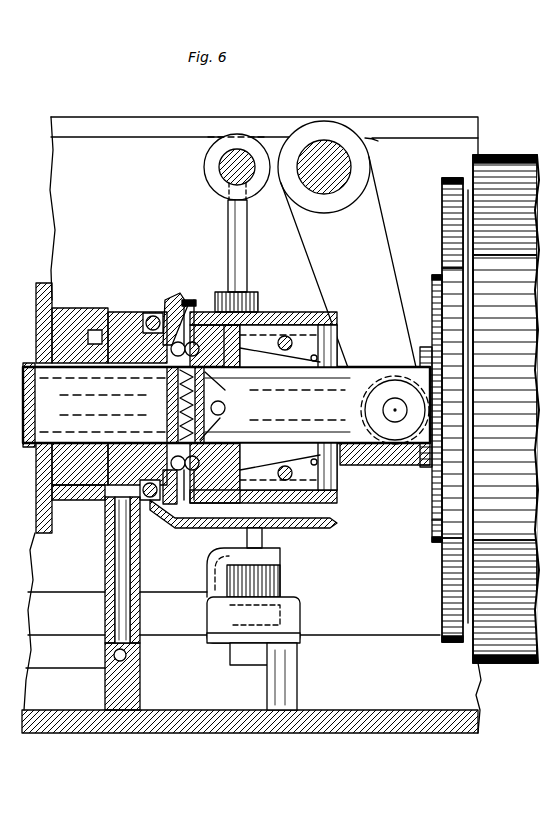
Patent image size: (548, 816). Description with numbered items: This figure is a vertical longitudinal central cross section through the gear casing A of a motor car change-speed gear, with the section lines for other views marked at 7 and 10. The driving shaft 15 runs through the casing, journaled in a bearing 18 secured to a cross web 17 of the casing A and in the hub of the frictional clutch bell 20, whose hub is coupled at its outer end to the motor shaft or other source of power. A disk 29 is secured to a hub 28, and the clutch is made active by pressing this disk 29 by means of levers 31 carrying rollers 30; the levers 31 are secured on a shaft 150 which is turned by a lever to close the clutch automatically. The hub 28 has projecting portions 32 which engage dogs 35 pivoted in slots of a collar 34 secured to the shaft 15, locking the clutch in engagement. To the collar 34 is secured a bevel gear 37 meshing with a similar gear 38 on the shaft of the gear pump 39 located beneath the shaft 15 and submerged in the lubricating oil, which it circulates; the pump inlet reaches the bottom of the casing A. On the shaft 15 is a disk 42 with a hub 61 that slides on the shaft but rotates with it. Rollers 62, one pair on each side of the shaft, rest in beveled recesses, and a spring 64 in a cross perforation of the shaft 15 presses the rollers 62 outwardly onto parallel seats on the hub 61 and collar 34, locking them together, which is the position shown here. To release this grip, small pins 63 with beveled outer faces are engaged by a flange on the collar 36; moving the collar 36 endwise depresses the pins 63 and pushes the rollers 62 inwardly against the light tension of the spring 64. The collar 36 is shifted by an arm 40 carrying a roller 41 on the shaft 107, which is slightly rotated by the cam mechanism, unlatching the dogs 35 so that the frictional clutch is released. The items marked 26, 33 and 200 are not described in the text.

The section line 7- 7 is at (94, 777).
The section line 10- 10 is at (314, 84).
The gear casing A is at (251, 425).
The shaft 107 is at (220, 171).
The shaft 150 is at (342, 168).
The levers 31 is at (352, 288).
The frictional clutch bell 20 is at (513, 665).
The gear 26 is at (445, 198).
The hub 28 is at (432, 466).
The disk 29 is at (440, 522).
The rollers 30 is at (393, 465).
The driving shaft 15 is at (226, 405).
The rollers 62 is at (222, 420).
The spring 64 is at (173, 405).
The projecting portions 32 is at (358, 455).
The disk 42 is at (38, 302).
The hub 61 is at (69, 308).
The bearing 18 is at (97, 312).
The pins 63 is at (152, 315).
The bevel gear 37 is at (172, 300).
The collar 34 is at (190, 305).
The arm 40 is at (249, 242).
The roller 41 is at (256, 299).
The collar 36 is at (318, 312).
The dogs 35 is at (280, 347).
The clutch wedge 33 is at (280, 471).
The gear 38 is at (196, 528).
The pump 39 is at (283, 580).
The cross web 17 is at (105, 568).
The ball 200 is at (114, 655).